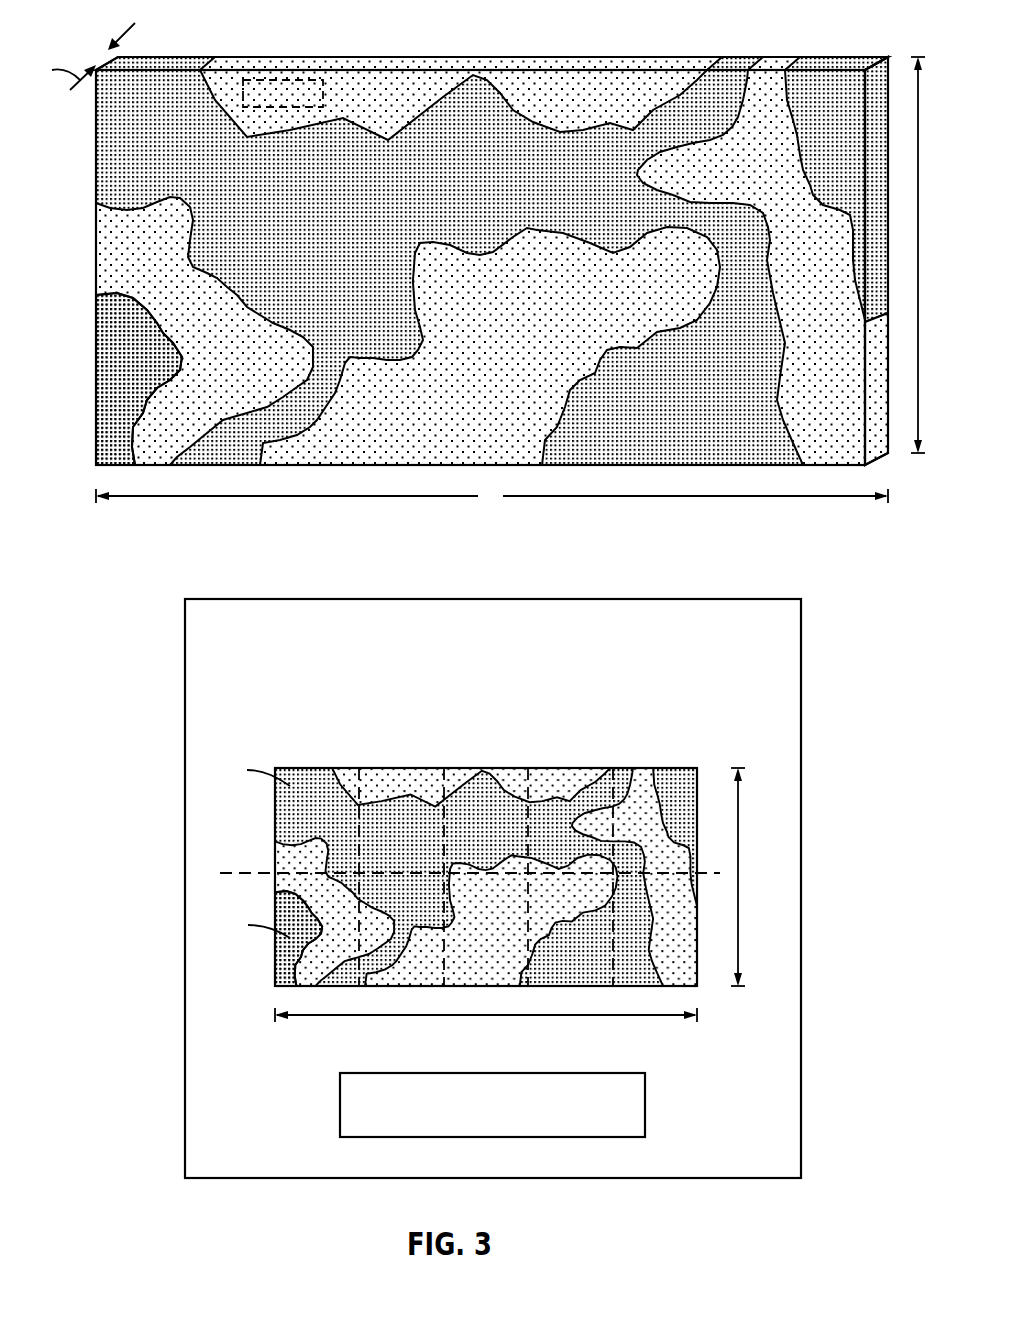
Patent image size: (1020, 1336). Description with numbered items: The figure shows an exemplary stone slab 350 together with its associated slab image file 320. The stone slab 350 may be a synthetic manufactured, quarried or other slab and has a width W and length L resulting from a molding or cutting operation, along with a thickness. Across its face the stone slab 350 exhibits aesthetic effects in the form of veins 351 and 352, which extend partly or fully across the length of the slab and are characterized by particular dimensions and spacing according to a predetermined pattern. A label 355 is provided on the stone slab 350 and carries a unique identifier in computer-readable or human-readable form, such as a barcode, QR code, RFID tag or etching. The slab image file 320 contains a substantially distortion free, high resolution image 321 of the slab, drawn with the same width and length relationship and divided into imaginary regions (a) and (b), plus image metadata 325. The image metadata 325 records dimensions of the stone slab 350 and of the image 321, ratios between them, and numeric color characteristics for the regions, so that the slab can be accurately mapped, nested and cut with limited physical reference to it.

The stone slab 350 is at (474, 264).
The vein 351 is at (105, 158).
The vein 352 is at (105, 256).
The label 355 is at (283, 80).
The slab image file 320 is at (694, 575).
The image 321 is at (630, 770).
The image metadata 325 is at (618, 1073).